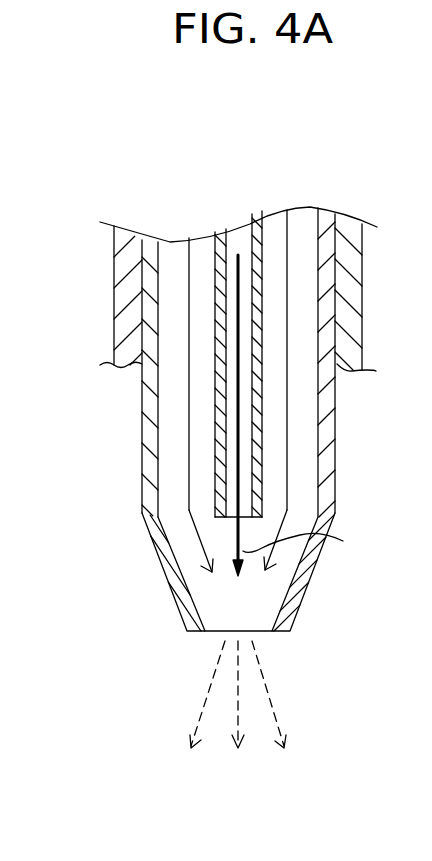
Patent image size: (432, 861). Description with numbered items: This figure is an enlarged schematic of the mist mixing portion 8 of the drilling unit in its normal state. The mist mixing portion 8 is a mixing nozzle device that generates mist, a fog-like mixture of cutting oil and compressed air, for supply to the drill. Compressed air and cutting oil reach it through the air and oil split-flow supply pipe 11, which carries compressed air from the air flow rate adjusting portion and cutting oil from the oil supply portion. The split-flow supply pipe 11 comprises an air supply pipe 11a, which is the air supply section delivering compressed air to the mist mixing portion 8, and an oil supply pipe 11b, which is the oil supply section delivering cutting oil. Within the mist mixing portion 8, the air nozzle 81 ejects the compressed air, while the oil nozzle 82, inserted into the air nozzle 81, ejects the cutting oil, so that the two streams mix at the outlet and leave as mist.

The air and oil split-flow supply pipe 11 is at (112, 282).
The air supply pipe 11a is at (305, 420).
The oil supply pipe 11b is at (242, 464).
The air nozzle 81 is at (142, 520).
The oil nozzle 82 is at (218, 432).
The mist mixing portion 8 is at (200, 572).